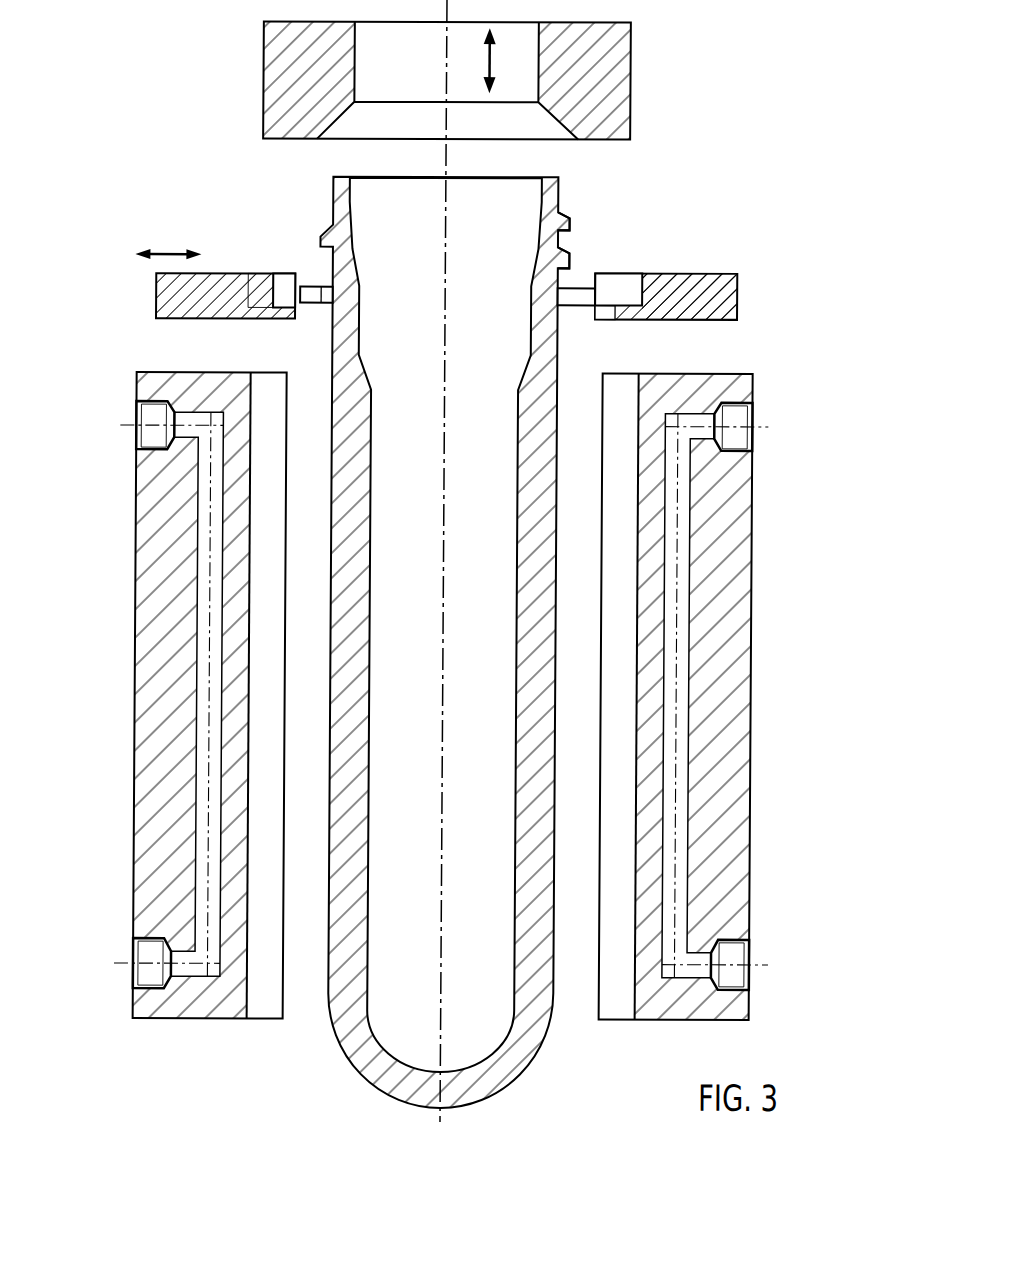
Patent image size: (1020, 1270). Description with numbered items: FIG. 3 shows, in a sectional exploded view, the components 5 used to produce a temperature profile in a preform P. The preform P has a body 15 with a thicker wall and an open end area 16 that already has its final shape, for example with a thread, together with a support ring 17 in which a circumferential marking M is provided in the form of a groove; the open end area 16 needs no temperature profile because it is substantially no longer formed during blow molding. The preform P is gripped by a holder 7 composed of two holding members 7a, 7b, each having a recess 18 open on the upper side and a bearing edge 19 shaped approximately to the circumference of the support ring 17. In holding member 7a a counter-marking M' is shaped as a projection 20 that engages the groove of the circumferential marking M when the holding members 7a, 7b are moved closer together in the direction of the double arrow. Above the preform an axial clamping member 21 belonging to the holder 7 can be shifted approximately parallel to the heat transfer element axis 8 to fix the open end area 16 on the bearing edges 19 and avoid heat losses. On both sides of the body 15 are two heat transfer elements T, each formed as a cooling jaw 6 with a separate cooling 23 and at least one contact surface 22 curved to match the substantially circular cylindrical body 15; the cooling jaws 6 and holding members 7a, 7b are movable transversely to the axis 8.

The heating device 5 is at (221, 158).
The cooling jaw 6 is at (138, 560).
The holder 7 is at (703, 260).
The holding member 7a is at (214, 274).
The holding member 7b is at (657, 273).
The heat transfer element axis 8 is at (450, 160).
The body 15 is at (366, 613).
The open end area 16 is at (578, 238).
The support ring 17 is at (578, 306).
The recess 18 is at (287, 274).
The bearing edge 19 is at (625, 305).
The projection 20 is at (273, 306).
The axial clamping member 21 is at (606, 124).
The contact surface 22 is at (265, 640).
The cooling 23 is at (209, 710).
The preform P is at (334, 520).
The circumferential marking M is at (315, 324).
The counter-marking M' is at (260, 221).
The heat transfer element T is at (594, 681).